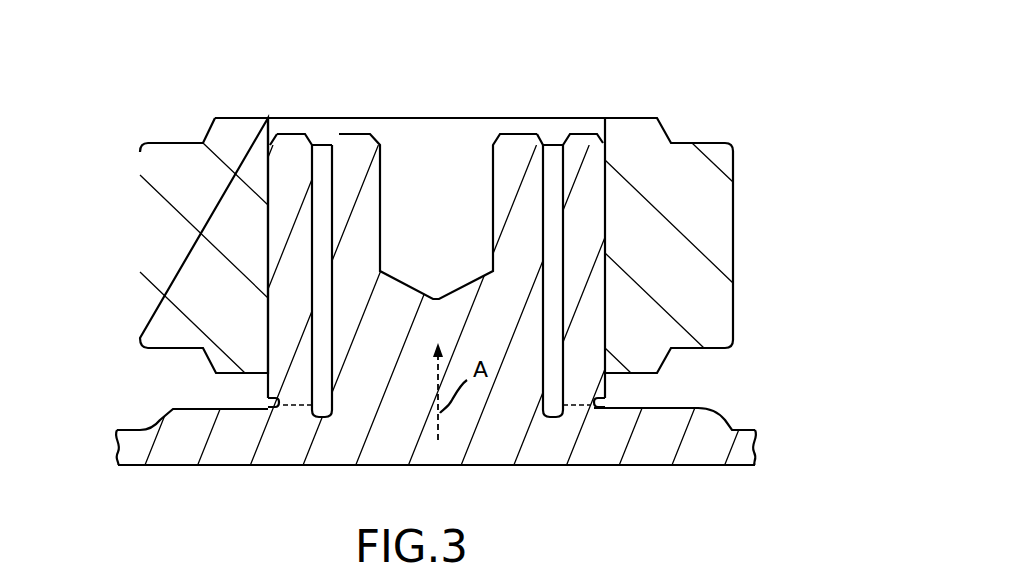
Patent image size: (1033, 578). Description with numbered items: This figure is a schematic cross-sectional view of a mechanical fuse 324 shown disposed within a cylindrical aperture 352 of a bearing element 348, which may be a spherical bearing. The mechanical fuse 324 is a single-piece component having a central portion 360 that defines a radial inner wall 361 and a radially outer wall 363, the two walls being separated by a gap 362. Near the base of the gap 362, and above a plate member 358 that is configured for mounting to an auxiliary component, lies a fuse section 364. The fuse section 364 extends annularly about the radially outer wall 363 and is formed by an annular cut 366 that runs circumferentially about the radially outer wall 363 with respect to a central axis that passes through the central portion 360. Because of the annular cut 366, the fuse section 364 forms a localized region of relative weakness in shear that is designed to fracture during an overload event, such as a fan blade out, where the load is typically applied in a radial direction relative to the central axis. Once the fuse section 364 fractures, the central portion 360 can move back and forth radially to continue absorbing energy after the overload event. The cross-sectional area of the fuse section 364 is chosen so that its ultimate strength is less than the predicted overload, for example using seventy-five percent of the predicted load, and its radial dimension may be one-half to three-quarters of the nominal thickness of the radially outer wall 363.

The mechanical fuse 324 is at (122, 114).
The bearing element 348 is at (728, 238).
The cylindrical aperture 352 is at (606, 172).
The plate member 358 is at (750, 448).
The central portion 360 is at (357, 148).
The radial inner wall 361 is at (527, 140).
The gap 362 is at (317, 138).
The radially outer wall 363 is at (580, 142).
The fuse section 364 is at (292, 406).
The annular cut 366 is at (256, 401).